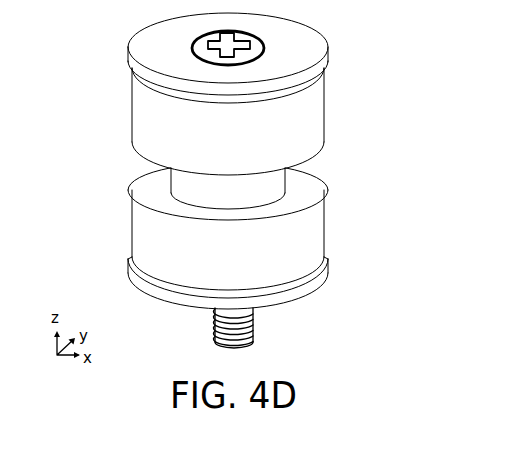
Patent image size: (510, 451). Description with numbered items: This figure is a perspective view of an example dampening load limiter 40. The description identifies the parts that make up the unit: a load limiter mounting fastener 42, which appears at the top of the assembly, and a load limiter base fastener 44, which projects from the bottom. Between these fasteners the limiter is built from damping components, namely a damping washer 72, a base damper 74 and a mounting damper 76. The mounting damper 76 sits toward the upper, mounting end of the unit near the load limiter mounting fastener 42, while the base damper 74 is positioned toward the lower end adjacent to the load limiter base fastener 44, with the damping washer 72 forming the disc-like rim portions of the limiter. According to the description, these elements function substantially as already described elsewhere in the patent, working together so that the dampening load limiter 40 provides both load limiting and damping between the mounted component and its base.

The dampening load limiter 40 is at (90, 105).
The load limiter mounting fastener 42 is at (264, 48).
The load limiter base fastener 44 is at (253, 318).
The damping washer 72 is at (328, 53).
The base damper 74 is at (323, 208).
The mounting damper 76 is at (325, 103).